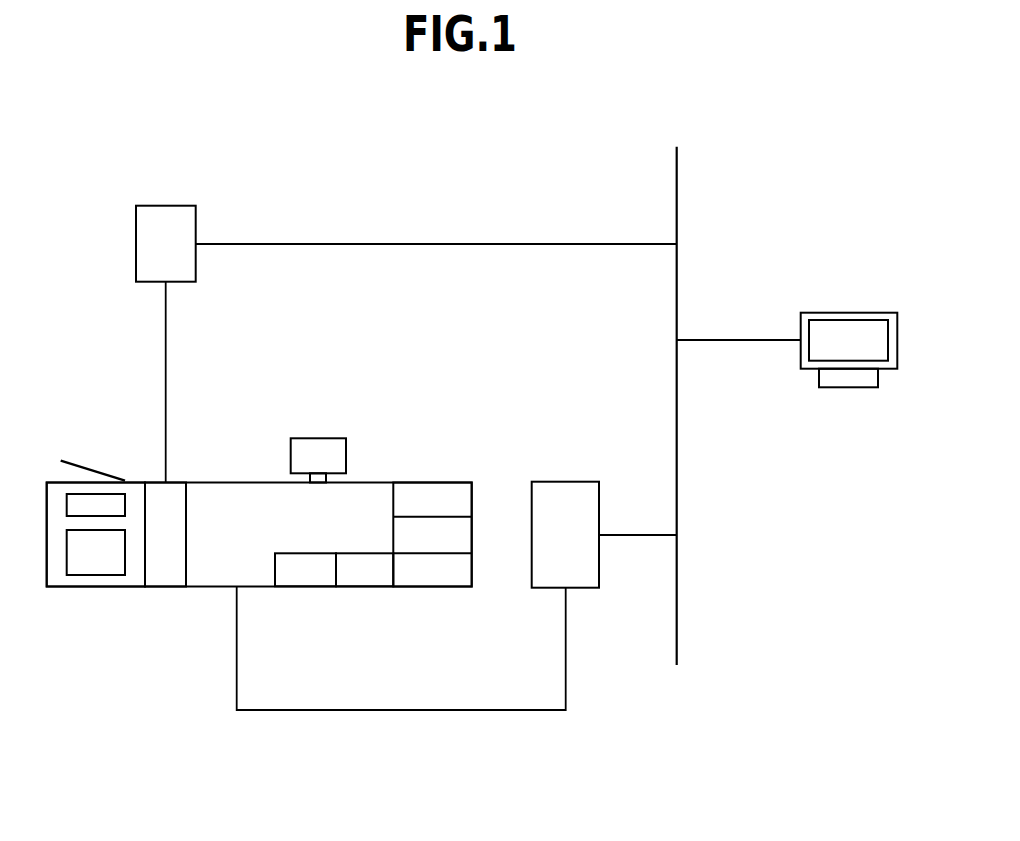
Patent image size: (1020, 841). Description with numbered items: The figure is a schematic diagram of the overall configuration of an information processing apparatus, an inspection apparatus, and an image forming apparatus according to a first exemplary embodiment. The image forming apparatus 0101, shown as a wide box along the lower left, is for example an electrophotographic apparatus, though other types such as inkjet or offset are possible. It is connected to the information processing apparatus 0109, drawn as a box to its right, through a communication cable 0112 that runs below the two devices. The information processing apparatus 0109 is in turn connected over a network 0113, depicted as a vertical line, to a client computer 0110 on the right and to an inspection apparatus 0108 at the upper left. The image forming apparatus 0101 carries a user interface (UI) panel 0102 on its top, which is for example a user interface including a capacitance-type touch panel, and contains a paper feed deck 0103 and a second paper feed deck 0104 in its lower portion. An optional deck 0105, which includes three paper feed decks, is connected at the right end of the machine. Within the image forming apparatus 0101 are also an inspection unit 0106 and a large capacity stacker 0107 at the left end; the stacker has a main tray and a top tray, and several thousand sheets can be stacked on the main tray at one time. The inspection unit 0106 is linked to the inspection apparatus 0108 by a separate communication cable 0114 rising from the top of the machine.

The image forming apparatus 0101 is at (225, 482).
The user interface (UI) panel 0102 is at (319, 437).
The paper feed deck 0103 is at (300, 590).
The paper feed deck 0104 is at (375, 590).
The optional deck 0105 is at (438, 482).
The inspection unit 0106 is at (170, 590).
The large capacity stacker 0107 is at (58, 590).
The inspection apparatus 0108 is at (166, 205).
The information processing apparatus 0109 is at (568, 481).
The client computer 0110 is at (848, 312).
The communication cable 0112 is at (470, 707).
The network 0113 is at (678, 617).
The communication cable 0114 is at (164, 360).